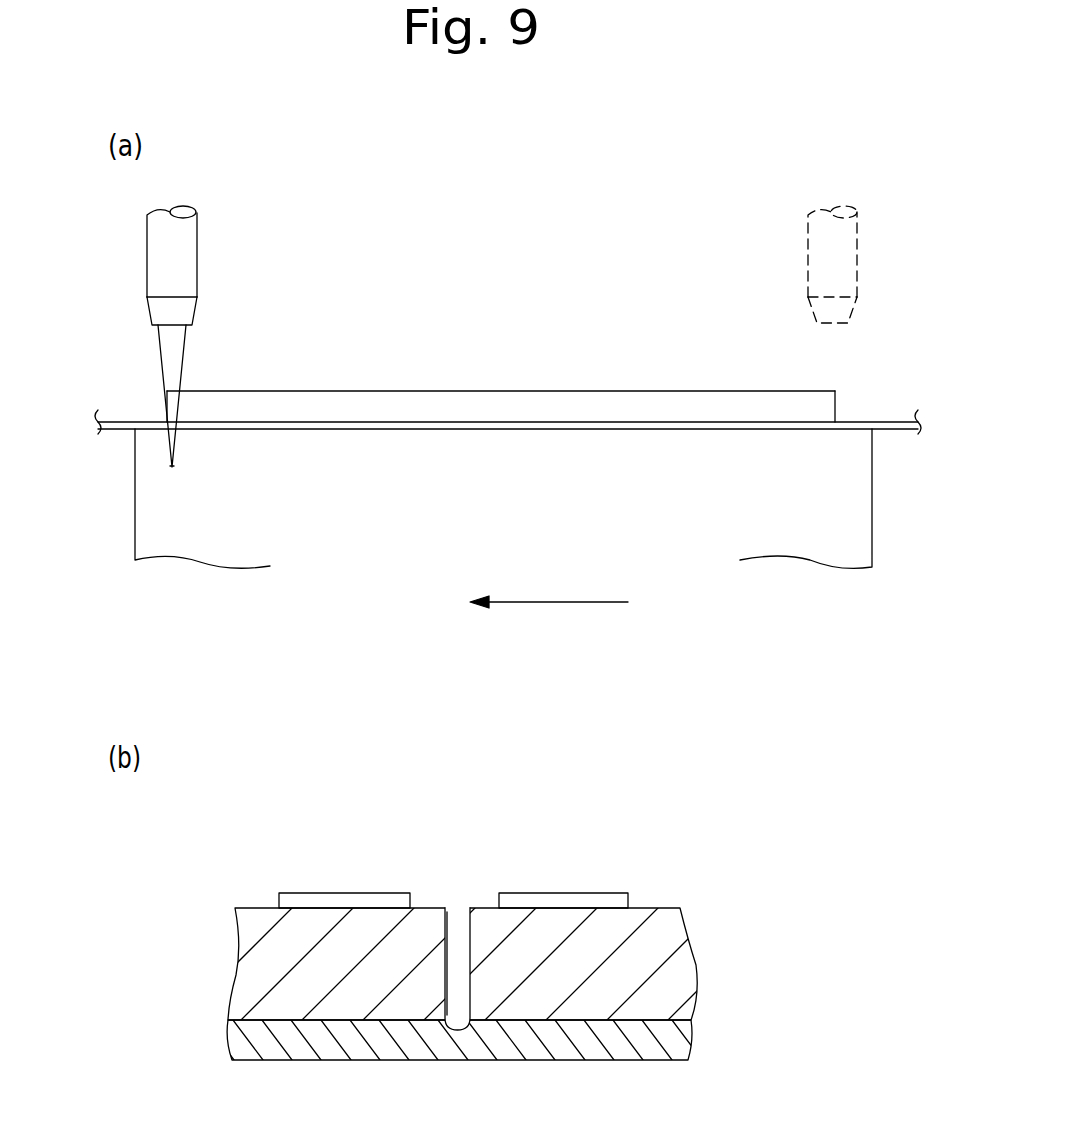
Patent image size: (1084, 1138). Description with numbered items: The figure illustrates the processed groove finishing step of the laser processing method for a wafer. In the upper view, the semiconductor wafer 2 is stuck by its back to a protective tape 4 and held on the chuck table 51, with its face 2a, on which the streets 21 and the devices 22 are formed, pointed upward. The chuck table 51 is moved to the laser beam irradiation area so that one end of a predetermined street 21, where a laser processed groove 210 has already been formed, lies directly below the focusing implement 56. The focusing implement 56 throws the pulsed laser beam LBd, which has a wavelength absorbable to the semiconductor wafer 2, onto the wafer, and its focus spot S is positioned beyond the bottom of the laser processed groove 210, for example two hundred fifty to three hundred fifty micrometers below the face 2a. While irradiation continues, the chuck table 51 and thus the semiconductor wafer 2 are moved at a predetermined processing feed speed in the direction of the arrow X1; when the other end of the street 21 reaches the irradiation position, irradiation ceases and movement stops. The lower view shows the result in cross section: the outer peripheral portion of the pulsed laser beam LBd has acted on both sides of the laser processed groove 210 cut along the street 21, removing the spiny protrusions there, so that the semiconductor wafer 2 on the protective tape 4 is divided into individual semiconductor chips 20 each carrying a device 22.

The focusing implement 56 is at (202, 243).
The pulsed laser beam LBd is at (160, 351).
The protective tape 4 is at (118, 421).
The focus spot S is at (176, 467).
The chuck table 51 is at (148, 508).
The face 2a is at (590, 391).
The semiconductor wafer 2 is at (723, 391).
The street 21 is at (845, 398).
The processing feed direction X1 is at (528, 601).
The semiconductor chip 20 is at (258, 907).
The device 22 is at (318, 893).
The laser processed groove 210 is at (456, 920).